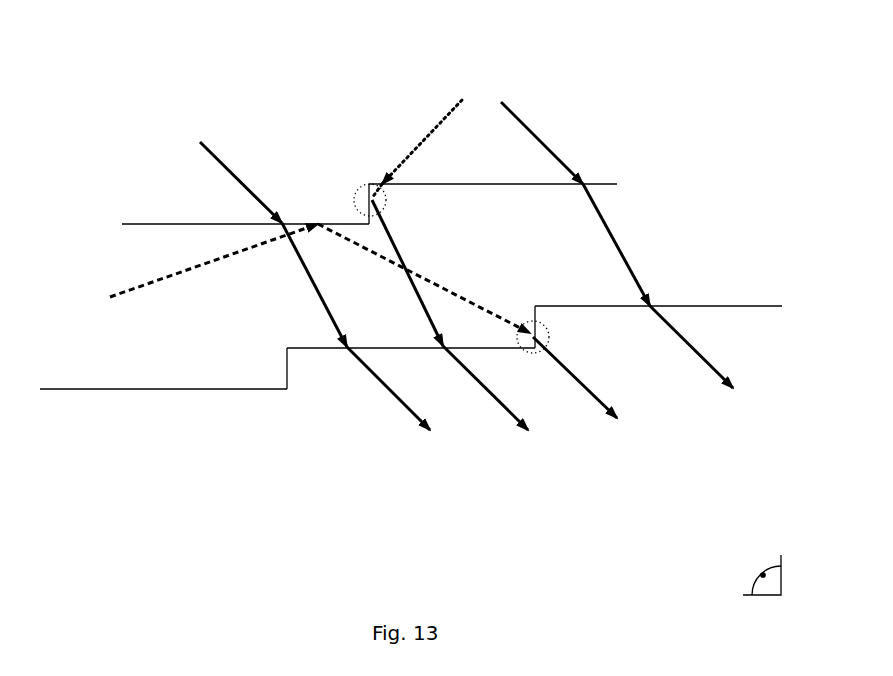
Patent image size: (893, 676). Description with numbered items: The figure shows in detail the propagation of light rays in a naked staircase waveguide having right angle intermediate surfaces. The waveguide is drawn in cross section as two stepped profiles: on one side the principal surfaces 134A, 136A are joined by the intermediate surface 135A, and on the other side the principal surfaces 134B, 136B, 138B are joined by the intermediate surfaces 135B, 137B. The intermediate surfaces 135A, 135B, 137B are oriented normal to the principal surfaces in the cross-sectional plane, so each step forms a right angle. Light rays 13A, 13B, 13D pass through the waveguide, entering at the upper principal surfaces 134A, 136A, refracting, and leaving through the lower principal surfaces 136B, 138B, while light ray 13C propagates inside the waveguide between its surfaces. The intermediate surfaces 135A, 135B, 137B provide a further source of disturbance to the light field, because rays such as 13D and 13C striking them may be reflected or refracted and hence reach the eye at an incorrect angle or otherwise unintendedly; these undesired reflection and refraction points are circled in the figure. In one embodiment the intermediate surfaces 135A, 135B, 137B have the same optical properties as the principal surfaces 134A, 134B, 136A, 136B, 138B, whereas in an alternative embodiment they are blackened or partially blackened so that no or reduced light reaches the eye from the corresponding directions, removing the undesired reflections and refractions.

The light ray 13A is at (224, 157).
The light ray 13B is at (527, 123).
The light ray 13C is at (122, 290).
The light ray 13D is at (419, 143).
The principal surface 134A is at (178, 224).
The intermediate surface 135A is at (366, 218).
The principal surface 136A is at (522, 187).
The principal surface 134B is at (200, 390).
The intermediate surface 135B is at (290, 377).
The principal surface 136B is at (420, 348).
The intermediate surface 137B is at (537, 315).
The principal surface 138B is at (745, 307).